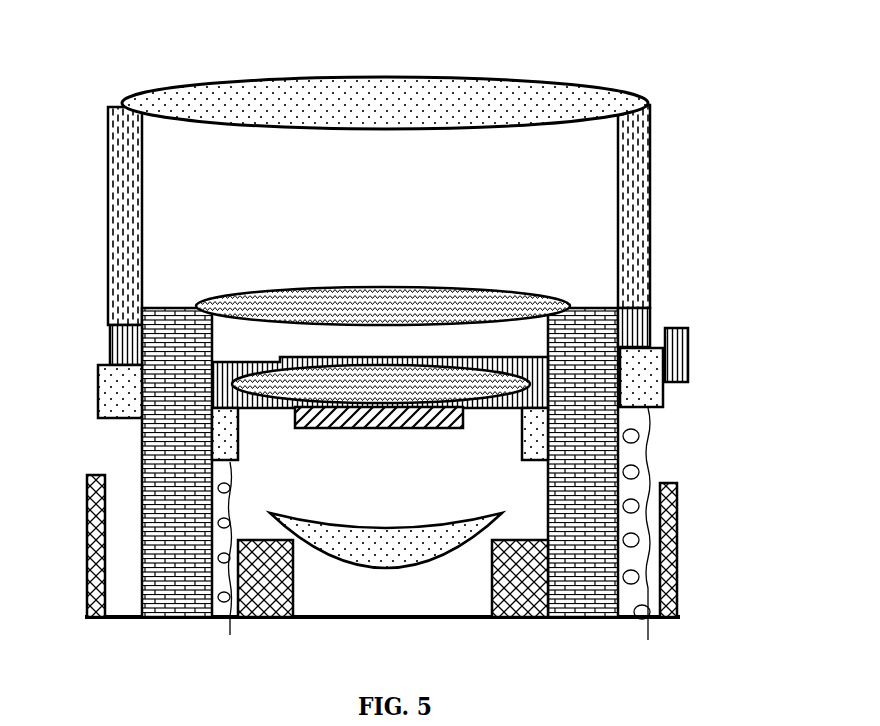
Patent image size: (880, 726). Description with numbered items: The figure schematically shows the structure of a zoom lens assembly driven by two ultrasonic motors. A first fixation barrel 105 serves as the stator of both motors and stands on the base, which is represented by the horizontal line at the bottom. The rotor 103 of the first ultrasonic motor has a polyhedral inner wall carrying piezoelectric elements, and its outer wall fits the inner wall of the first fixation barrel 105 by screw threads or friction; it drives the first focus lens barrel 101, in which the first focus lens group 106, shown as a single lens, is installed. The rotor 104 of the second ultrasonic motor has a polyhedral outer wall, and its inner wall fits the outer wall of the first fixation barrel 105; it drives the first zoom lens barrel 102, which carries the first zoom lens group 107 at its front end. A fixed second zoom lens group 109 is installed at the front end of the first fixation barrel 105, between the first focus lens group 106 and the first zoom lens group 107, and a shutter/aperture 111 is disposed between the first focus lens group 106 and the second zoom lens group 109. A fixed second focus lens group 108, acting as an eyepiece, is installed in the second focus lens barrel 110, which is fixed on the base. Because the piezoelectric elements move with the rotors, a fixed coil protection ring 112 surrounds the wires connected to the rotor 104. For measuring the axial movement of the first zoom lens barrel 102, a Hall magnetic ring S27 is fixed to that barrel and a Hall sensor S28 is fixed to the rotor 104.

The first focus lens barrel 101 is at (488, 277).
The first zoom lens barrel 102 is at (435, 202).
The rotor of the first ultrasonic motor 103 is at (275, 442).
The rotor of the second ultrasonic motor 104 is at (429, 402).
The first fixation barrel 105 is at (321, 411).
The first focus lens group 106 is at (348, 211).
The first zoom lens group 107 is at (385, 68).
The second focus lens group 108 is at (386, 595).
The second zoom lens group 109 is at (471, 177).
The second focus lens barrel 110 is at (369, 609).
The shutter/aperture 111 is at (386, 540).
The coil protection ring 112 is at (426, 546).
The Hall magnetic ring S27 is at (436, 297).
The Hall sensor S28 is at (721, 336).